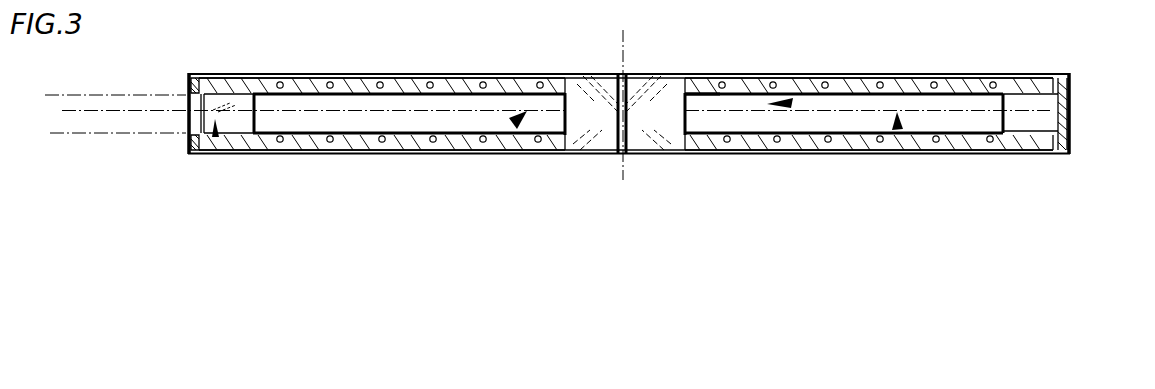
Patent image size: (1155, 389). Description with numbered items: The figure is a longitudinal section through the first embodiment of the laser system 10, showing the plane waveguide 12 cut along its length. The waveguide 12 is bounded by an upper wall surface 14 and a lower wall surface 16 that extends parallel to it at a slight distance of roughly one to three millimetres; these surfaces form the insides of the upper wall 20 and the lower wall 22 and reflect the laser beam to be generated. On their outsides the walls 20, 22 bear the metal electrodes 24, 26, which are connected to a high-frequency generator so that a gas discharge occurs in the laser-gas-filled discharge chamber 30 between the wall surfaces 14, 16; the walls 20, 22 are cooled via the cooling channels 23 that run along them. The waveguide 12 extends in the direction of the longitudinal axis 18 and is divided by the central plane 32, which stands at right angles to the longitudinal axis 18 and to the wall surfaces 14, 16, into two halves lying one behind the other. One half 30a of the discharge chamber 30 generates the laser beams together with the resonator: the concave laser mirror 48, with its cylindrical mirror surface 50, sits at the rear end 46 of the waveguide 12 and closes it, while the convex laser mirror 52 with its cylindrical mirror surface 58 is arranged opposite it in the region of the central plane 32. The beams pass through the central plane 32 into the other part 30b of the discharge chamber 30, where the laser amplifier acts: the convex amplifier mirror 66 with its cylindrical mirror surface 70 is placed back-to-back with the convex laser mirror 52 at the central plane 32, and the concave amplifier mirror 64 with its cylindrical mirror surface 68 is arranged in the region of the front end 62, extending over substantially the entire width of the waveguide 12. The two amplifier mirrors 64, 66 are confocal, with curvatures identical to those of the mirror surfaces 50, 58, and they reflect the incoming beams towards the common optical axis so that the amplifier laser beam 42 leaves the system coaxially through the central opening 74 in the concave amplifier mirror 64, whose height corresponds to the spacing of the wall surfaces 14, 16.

The laser system 10 is at (908, 64).
The plane waveguide 12 is at (476, 58).
The upper wall surface 14 is at (411, 98).
The lower wall surface 16 is at (428, 119).
The longitudinal axis 18 is at (122, 112).
The upper wall 20 is at (306, 86).
The lower wall 22 is at (312, 140).
The cooling channels 23 is at (545, 79).
The metal electrode 24 is at (346, 78).
The metal electrode 26 is at (356, 150).
The discharge chamber 30 is at (898, 130).
The half of the discharge chamber 30a is at (795, 100).
The part of the discharge chamber 30b is at (508, 128).
The central plane 32 is at (628, 178).
The amplifier laser beam 42 is at (67, 135).
The rear end 46 is at (1072, 115).
The concave laser mirror 48 is at (1046, 99).
The cylindrical mirror surface 50 is at (1003, 128).
The convex laser mirror 52 is at (663, 96).
The cylindrical mirror surface 58 is at (697, 97).
The front end 62 is at (190, 79).
The concave amplifier mirror 64 is at (214, 138).
The convex amplifier mirror 66 is at (587, 95).
The cylindrical mirror surface 68 is at (236, 118).
The cylindrical mirror surface 70 is at (566, 120).
The central opening 74 is at (195, 123).